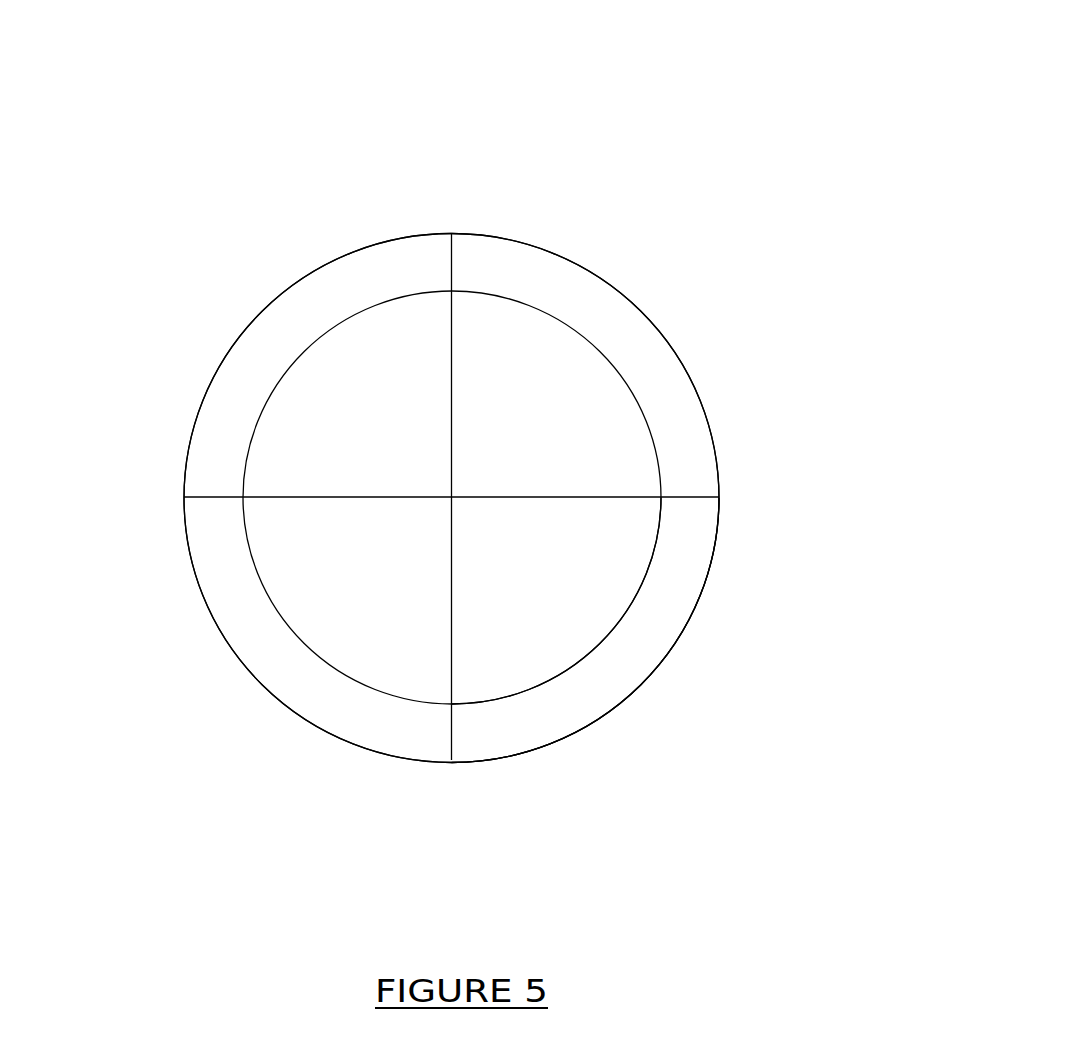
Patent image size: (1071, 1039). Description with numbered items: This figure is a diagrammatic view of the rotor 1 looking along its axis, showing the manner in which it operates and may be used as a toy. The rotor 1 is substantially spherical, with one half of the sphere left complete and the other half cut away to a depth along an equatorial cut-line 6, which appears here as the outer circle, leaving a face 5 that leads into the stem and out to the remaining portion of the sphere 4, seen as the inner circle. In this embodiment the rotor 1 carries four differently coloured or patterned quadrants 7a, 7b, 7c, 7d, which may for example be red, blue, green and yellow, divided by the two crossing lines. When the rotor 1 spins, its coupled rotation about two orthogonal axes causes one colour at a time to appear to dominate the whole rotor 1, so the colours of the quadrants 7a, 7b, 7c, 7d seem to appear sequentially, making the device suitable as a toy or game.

The rotor 1 is at (460, 384).
The remaining portion of the sphere 4 is at (585, 497).
The face 5 is at (683, 601).
The equatorial cut-line 6 is at (586, 689).
The quadrant 7a is at (259, 302).
The quadrant 7b is at (246, 669).
The quadrant 7c is at (649, 299).
The quadrant 7d is at (669, 668).